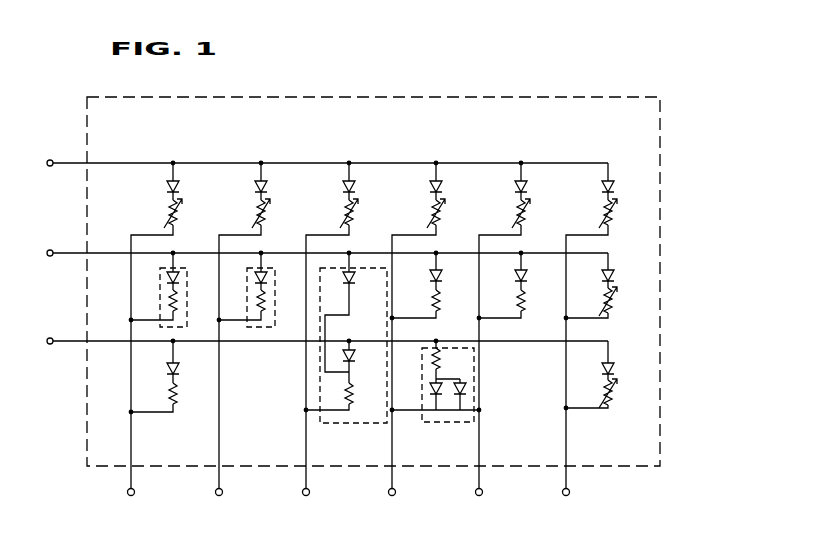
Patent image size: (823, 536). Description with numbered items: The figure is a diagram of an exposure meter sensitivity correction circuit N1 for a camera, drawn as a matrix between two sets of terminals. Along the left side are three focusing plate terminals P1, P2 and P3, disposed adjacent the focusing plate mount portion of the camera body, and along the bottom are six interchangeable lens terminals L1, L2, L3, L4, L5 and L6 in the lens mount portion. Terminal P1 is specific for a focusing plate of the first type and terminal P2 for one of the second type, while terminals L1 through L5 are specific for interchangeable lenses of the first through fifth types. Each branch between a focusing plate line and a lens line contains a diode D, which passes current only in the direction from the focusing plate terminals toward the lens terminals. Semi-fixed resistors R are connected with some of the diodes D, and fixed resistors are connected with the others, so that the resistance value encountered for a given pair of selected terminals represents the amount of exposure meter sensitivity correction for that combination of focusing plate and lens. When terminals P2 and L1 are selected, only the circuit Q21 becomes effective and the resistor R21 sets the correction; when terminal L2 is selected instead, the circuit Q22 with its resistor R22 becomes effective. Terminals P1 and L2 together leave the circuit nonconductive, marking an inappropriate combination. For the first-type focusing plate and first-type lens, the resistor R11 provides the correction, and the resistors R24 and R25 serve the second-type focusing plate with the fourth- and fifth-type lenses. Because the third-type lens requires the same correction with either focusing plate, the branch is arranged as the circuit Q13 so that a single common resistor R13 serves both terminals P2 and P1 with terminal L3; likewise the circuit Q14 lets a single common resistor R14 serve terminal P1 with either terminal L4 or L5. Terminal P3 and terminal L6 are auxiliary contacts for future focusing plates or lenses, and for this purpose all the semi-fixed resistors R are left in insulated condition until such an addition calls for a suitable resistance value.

The exposure meter sensitivity correction circuit N1 is at (416, 97).
The terminal P1 is at (312, 351).
The terminal P2 is at (312, 263).
The terminal P3 is at (312, 171).
The terminal L1 is at (131, 508).
The terminal L2 is at (219, 508).
The terminal L3 is at (306, 508).
The terminal L4 is at (392, 508).
The terminal L5 is at (479, 508).
The terminal L6 is at (566, 508).
The diode D is at (626, 186).
The semi-fixed resistor R is at (626, 219).
The circuit Q21 is at (127, 290).
The resistor R21 is at (162, 312).
The circuit Q22 is at (268, 276).
The resistor R22 is at (265, 303).
The circuit Q13 is at (356, 279).
The resistor R13 is at (352, 393).
The circuit Q14 is at (430, 391).
The resistor R14 is at (440, 352).
The resistor R24 is at (445, 318).
The resistor R25 is at (528, 276).
The resistor R11 is at (180, 369).